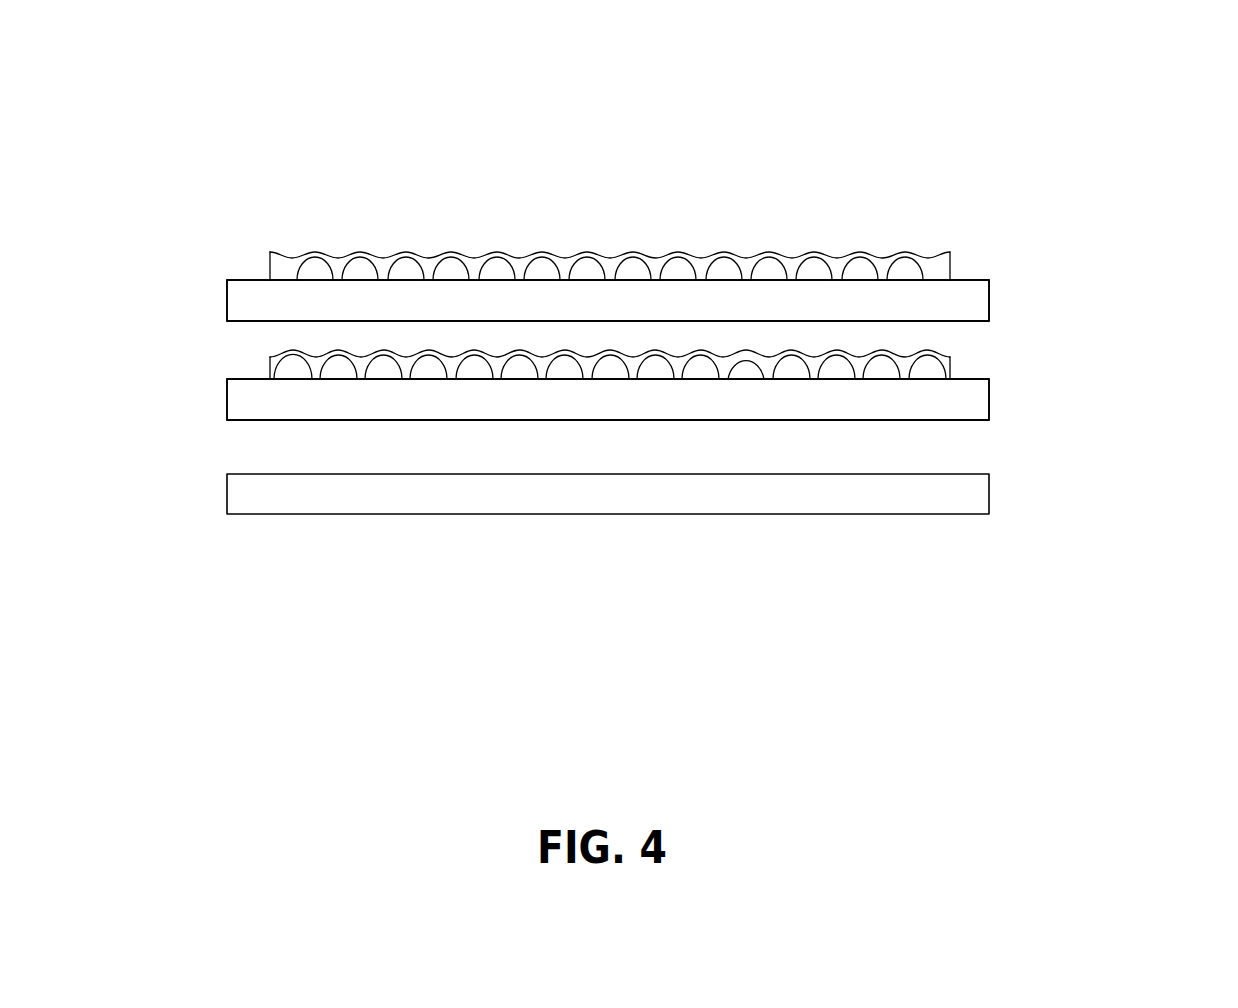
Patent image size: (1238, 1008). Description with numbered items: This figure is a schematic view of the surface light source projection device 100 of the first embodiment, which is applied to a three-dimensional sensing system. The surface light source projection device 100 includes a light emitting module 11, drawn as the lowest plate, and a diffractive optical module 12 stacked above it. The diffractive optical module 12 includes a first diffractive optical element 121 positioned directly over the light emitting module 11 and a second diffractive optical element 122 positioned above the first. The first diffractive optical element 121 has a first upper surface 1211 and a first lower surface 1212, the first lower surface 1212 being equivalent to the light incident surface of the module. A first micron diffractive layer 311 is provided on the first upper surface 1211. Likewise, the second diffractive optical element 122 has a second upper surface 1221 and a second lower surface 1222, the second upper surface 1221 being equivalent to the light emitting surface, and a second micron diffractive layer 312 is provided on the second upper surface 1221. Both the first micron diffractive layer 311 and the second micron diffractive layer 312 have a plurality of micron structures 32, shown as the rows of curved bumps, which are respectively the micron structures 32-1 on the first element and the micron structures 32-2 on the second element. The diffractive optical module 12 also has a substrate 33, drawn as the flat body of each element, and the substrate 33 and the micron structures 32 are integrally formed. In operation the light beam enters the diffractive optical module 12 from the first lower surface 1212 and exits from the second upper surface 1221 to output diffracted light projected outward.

The surface light source projection device 100 is at (74, 82).
The light emitting module 11 is at (988, 493).
The diffractive optical module 12 is at (1153, 207).
The first diffractive optical element 121 is at (990, 397).
The second diffractive optical element 122 is at (990, 297).
The first upper surface 1211 is at (250, 378).
The first lower surface 1212 is at (246, 422).
The second upper surface 1221 is at (247, 280).
The second lower surface 1222 is at (253, 322).
The substrate 33 is at (237, 295).
The micron structures 32 is at (848, 135).
The micron structures 32-1 is at (612, 355).
The micron structures 32-2 is at (680, 253).
The first micron diffractive layer 311 is at (950, 353).
The second micron diffractive layer 312 is at (905, 250).